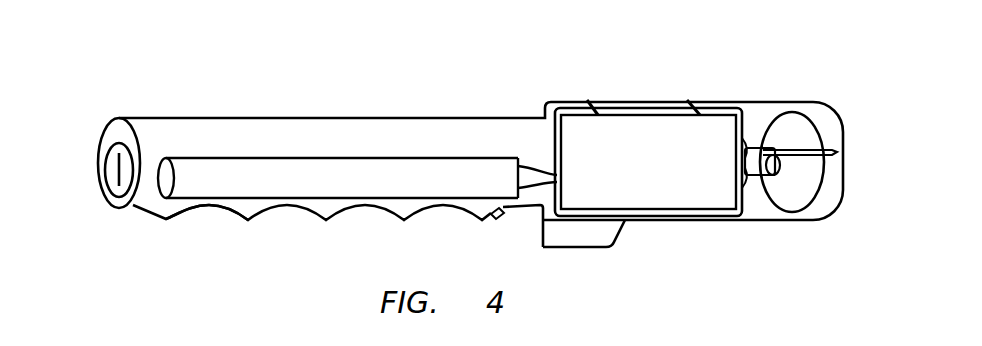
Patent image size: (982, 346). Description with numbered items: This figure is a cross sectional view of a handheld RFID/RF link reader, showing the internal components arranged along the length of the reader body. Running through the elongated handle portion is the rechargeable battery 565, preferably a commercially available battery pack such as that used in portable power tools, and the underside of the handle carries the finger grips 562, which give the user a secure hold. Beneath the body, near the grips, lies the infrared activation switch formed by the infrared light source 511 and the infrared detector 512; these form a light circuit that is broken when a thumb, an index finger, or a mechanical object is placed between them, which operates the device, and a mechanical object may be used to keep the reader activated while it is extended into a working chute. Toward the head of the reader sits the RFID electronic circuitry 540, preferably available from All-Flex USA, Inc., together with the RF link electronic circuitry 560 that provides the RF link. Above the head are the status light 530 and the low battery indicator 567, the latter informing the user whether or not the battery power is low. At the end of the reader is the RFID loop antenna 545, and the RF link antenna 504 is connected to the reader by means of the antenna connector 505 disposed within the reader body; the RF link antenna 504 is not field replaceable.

The RF link antenna 504 is at (840, 187).
The antenna connector 505 is at (782, 120).
The infrared light source 511 is at (542, 235).
The infrared detector 512 is at (502, 220).
The status light 530 is at (695, 98).
The RFID electronic circuitry 540 is at (602, 122).
The RFID loop antenna 545 is at (786, 123).
The RF link electronic circuitry 560 is at (743, 216).
The finger grips 562 is at (228, 209).
The rechargeable battery 565 is at (305, 171).
The low battery indicator 567 is at (585, 98).